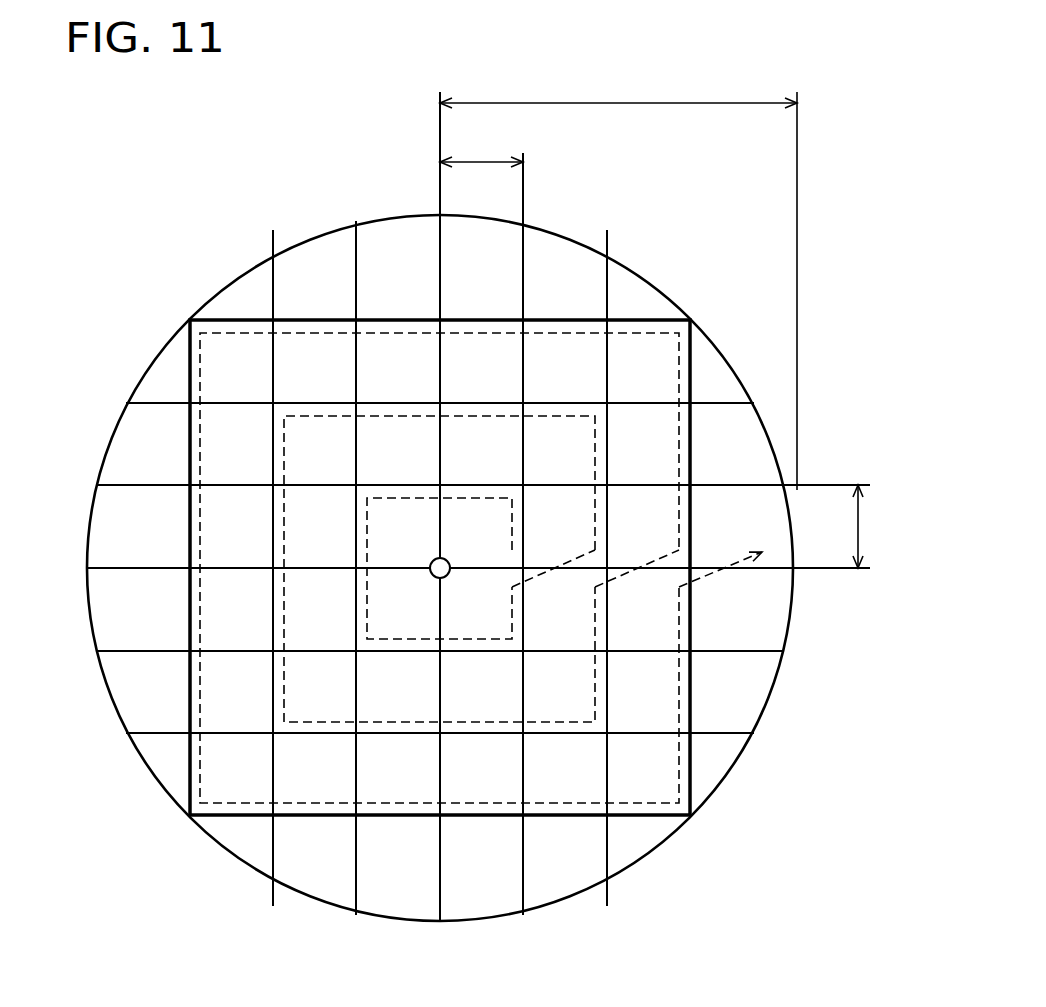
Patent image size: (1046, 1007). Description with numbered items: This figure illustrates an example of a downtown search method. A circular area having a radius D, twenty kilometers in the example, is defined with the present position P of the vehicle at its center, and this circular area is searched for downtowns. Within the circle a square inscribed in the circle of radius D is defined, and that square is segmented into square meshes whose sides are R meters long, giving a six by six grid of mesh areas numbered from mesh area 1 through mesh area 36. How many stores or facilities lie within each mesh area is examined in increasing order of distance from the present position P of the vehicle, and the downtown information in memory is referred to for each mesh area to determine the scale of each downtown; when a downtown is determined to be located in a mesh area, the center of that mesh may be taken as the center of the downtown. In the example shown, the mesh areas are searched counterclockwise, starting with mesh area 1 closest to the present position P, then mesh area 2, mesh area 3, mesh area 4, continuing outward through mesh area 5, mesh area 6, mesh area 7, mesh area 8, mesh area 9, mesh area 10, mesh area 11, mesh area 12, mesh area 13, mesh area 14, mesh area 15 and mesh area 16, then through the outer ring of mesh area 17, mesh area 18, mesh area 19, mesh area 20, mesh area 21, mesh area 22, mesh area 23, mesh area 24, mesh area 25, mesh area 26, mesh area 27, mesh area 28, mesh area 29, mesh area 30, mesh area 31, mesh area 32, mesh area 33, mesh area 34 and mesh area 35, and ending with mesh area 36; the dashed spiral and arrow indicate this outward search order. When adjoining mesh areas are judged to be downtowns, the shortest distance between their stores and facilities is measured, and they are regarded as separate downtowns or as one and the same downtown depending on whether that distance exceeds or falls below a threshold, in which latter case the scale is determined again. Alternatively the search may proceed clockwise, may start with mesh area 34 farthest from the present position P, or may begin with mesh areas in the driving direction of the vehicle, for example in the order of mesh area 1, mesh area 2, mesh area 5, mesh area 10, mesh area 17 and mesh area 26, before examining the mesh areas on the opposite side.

The mesh area 1 is at (481, 526).
The mesh area 2 is at (398, 526).
The mesh area 3 is at (398, 609).
The mesh area 4 is at (481, 609).
The mesh area 5 is at (565, 526).
The mesh area 6 is at (565, 444).
The mesh area 7 is at (481, 444).
The mesh area 8 is at (398, 444).
The mesh area 9 is at (314, 444).
The mesh area 10 is at (314, 526).
The mesh area 11 is at (314, 609).
The mesh area 12 is at (314, 692).
The mesh area 13 is at (398, 692).
The mesh area 14 is at (481, 692).
The mesh area 15 is at (565, 692).
The mesh area 16 is at (565, 609).
The mesh area 17 is at (648, 526).
The mesh area 18 is at (648, 444).
The mesh area 19 is at (648, 361).
The mesh area 20 is at (565, 361).
The mesh area 21 is at (481, 361).
The mesh area 22 is at (398, 361).
The mesh area 23 is at (314, 361).
The mesh area 24 is at (231, 361).
The mesh area 25 is at (231, 444).
The mesh area 26 is at (231, 526).
The mesh area 27 is at (231, 609).
The mesh area 28 is at (231, 692).
The mesh area 29 is at (231, 774).
The mesh area 30 is at (314, 774).
The mesh area 31 is at (398, 774).
The mesh area 32 is at (481, 774).
The mesh area 33 is at (565, 774).
The mesh area 34 is at (648, 774).
The mesh area 35 is at (648, 692).
The mesh area 36 is at (648, 609).
The present position of the vehicle P is at (425, 584).
The side length of mesh R is at (662, 348).
The radius of circular search area D is at (618, 279).